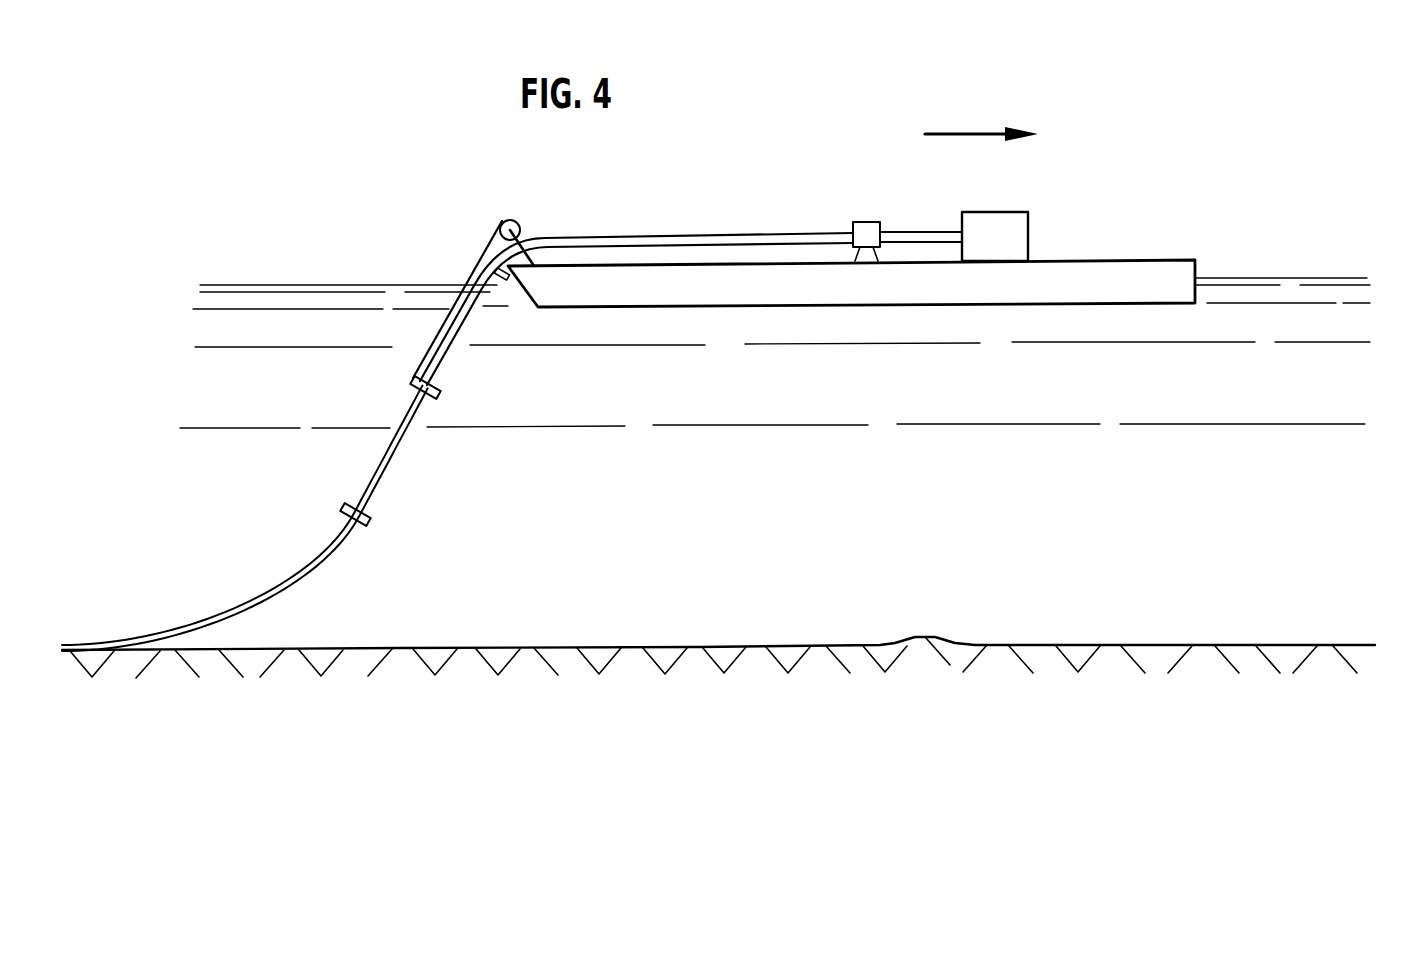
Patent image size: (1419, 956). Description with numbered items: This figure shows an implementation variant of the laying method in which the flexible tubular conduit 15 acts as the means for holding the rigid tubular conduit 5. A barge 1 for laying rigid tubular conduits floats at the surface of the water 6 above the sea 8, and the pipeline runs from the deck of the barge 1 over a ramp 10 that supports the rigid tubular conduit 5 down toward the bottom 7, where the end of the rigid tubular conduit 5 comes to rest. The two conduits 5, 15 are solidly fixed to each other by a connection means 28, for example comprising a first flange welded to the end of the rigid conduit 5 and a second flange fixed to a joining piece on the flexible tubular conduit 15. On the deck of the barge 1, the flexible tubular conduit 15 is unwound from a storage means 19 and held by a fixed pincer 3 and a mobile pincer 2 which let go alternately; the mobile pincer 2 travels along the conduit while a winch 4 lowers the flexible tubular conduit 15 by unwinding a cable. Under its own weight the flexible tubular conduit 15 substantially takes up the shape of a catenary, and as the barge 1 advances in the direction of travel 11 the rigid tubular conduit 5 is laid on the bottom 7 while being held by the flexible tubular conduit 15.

The barge 1 is at (1088, 313).
The mobile pincer 2 is at (440, 389).
The fixed pincer 3 is at (870, 222).
The winch 4 is at (511, 219).
The rigid tubular conduit 5 is at (332, 553).
The water surface 6 is at (1287, 277).
The bottom 7 is at (1195, 643).
The water body 8 is at (973, 483).
The ramp 10 is at (509, 282).
The direction of vessel travel 11 is at (982, 132).
The flexible tubular conduit 15 is at (753, 232).
The storage means 19 is at (1003, 222).
The connection means 28 is at (368, 520).